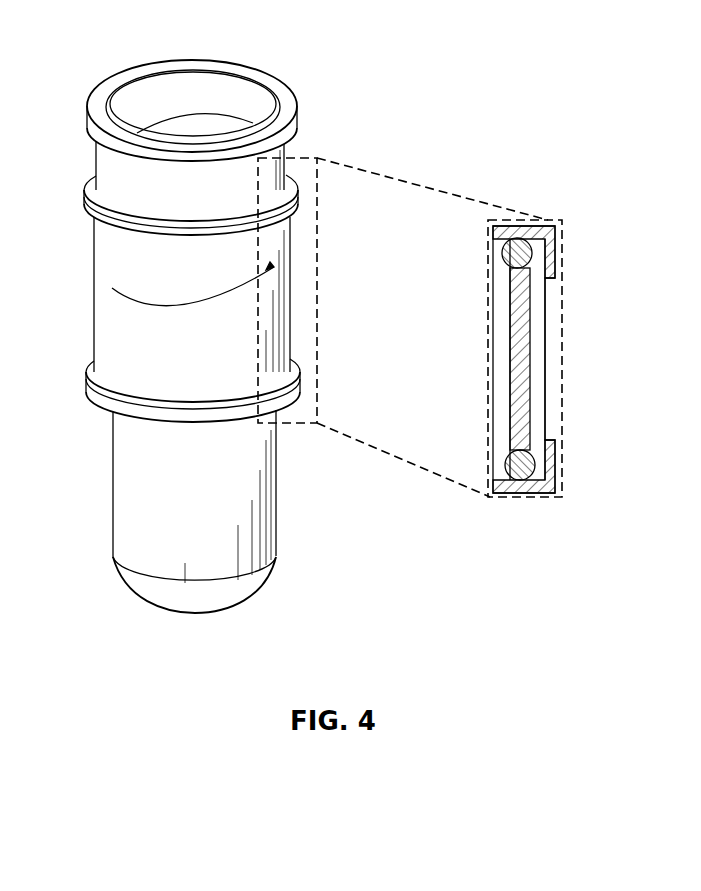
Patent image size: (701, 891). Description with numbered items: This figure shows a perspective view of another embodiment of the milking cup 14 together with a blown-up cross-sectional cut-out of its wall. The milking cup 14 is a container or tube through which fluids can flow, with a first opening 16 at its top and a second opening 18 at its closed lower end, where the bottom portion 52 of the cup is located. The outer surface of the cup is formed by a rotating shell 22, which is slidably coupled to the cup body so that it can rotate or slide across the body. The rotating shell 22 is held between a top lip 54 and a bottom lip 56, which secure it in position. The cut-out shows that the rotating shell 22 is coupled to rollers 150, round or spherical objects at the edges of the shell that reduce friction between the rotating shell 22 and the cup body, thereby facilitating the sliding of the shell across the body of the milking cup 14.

The milking cup 14 is at (258, 470).
The first opening 16 is at (168, 93).
The second opening 18 is at (228, 603).
The rotating shell 22 is at (109, 269).
The bottom portion 52 is at (127, 527).
The top lip 54 is at (517, 222).
The bottom lip 56 is at (527, 497).
The rollers 150 is at (528, 255).